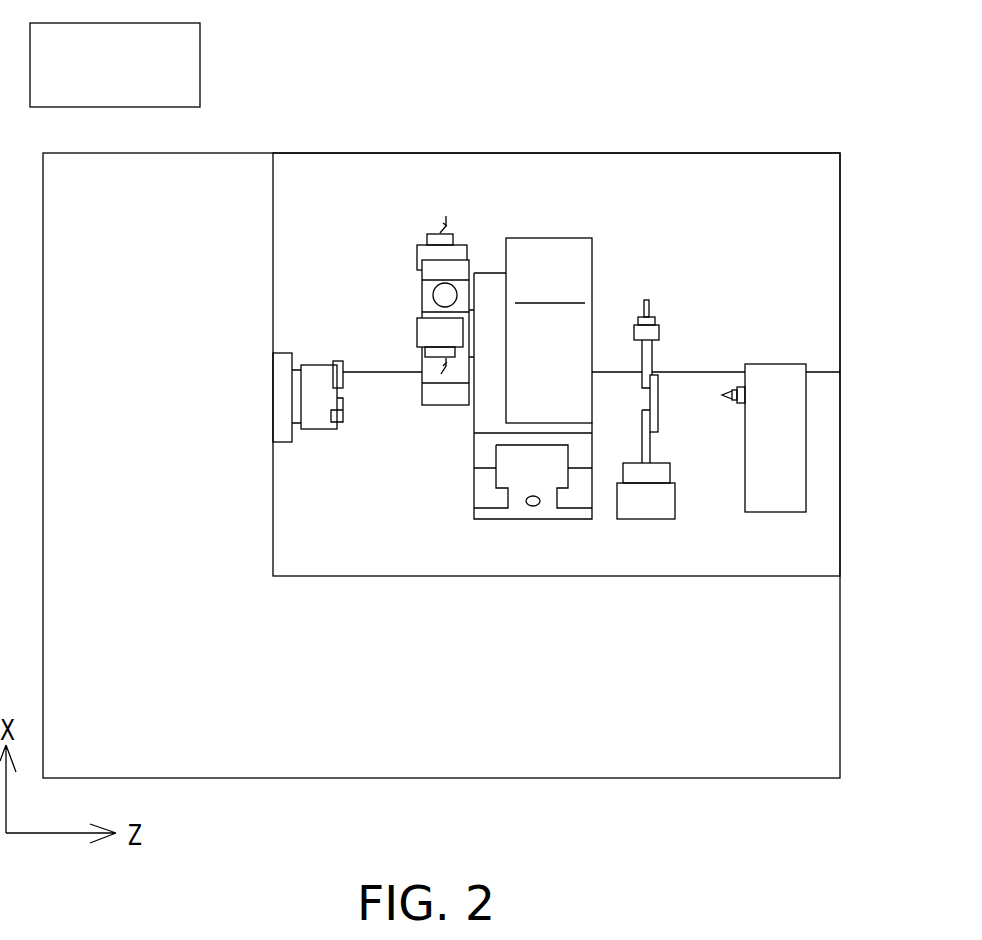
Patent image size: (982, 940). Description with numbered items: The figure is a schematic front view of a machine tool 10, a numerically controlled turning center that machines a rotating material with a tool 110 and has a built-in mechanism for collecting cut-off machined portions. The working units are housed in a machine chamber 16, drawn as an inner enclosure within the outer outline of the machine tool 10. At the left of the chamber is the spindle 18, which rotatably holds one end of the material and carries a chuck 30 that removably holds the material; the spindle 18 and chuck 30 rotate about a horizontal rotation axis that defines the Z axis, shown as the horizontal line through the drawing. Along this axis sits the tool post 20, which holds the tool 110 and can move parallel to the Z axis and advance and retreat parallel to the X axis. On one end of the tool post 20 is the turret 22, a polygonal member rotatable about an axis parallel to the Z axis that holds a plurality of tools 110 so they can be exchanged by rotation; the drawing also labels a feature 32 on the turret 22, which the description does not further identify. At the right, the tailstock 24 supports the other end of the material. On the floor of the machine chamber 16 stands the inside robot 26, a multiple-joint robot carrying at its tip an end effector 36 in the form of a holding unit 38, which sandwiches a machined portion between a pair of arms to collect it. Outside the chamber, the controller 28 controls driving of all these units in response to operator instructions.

The machine tool 10 is at (557, 94).
The machine chamber 16 is at (367, 213).
The spindle 18 is at (296, 353).
The tool post 20 is at (560, 238).
The turret 22 is at (419, 367).
The tailstock 24 is at (782, 364).
The inside robot 26 is at (667, 442).
The controller 28 is at (200, 62).
The chuck 30 is at (343, 361).
The rotation axis 32 is at (433, 294).
The end effector 36 is at (645, 300).
The holding unit 38 is at (700, 314).
The tool 110 is at (432, 232).